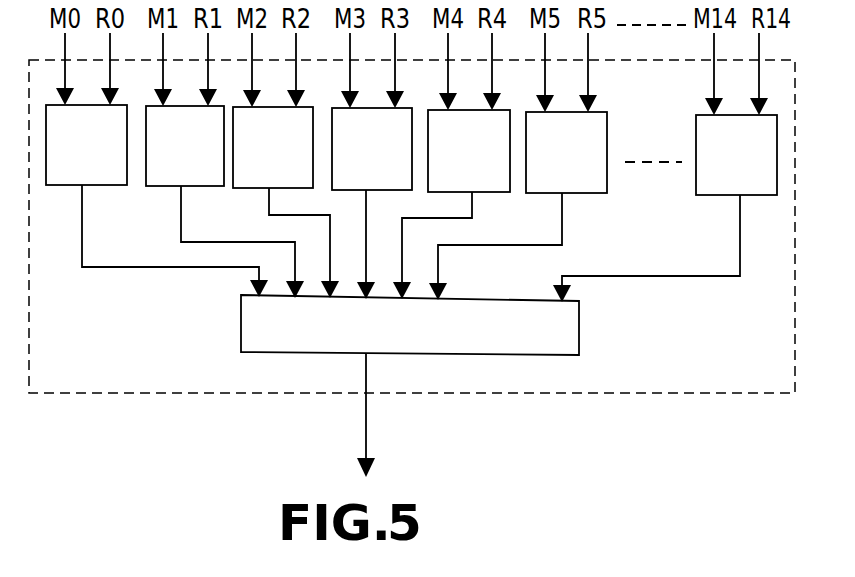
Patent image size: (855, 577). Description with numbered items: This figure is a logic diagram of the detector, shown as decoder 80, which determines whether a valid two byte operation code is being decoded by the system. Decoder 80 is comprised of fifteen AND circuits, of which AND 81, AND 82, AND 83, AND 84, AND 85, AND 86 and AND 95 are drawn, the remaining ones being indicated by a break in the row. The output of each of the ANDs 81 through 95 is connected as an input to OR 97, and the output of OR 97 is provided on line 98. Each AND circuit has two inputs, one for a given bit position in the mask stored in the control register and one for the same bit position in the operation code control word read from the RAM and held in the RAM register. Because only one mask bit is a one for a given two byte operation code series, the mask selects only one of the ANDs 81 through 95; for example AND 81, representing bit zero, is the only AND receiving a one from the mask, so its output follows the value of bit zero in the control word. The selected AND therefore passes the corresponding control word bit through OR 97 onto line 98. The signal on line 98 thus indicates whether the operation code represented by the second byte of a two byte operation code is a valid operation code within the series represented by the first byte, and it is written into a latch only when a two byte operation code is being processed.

The decoder 80 is at (710, 393).
The AND 81 is at (157, 201).
The AND 82 is at (225, 202).
The AND 83 is at (286, 202).
The AND 84 is at (372, 203).
The AND 85 is at (451, 204).
The AND 86 is at (518, 206).
The AND 95 is at (665, 208).
The OR 97 is at (410, 325).
The line 98 is at (366, 438).